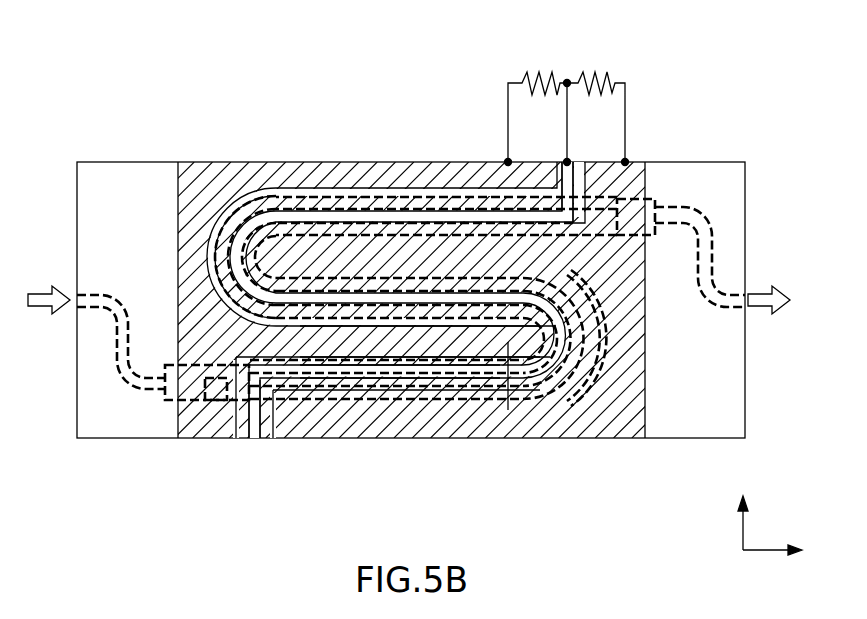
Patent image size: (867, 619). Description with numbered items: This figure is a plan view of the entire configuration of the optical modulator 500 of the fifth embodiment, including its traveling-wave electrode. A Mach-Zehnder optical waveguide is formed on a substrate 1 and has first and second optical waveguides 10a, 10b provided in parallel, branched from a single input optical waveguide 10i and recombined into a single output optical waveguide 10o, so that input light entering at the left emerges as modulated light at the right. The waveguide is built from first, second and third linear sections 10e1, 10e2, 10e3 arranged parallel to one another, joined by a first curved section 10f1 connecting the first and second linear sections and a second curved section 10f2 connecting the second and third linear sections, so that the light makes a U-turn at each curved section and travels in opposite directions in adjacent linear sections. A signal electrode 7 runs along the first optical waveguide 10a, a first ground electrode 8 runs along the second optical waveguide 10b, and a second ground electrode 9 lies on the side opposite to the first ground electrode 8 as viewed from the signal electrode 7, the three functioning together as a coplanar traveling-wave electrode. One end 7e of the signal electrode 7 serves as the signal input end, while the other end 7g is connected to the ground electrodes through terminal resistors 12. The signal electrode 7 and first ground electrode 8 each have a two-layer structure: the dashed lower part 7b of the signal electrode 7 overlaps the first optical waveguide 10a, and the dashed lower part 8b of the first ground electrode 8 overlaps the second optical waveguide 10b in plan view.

The substrate 1 is at (104, 161).
The signal electrode 7 is at (303, 404).
The lower part of the signal electrode 7b is at (341, 400).
The one end of the signal electrode 7e is at (255, 440).
The other end of the signal electrode 7g is at (574, 172).
The first ground electrode 8 is at (373, 428).
The lower part of the first ground electrode 8b is at (400, 420).
The second ground electrode 9 is at (462, 345).
The first optical waveguide 10a is at (212, 400).
The second optical waveguide 10b is at (229, 404).
The first linear section 10e1 is at (430, 400).
The second linear section 10e2 is at (327, 283).
The third linear section 10e3 is at (392, 196).
The first curved section 10f1 is at (604, 365).
The second curved section 10f2 is at (217, 232).
The input optical waveguide 10i is at (88, 312).
The output optical waveguide 10o is at (737, 310).
The terminal resistors 12 is at (525, 72).
The optical modulator 500 is at (322, 96).